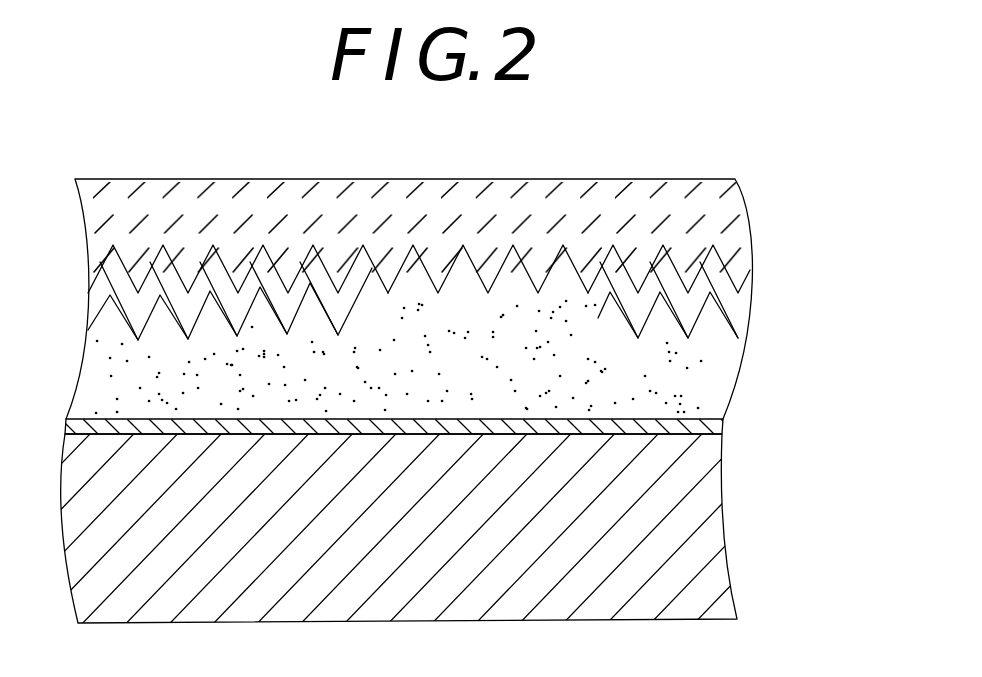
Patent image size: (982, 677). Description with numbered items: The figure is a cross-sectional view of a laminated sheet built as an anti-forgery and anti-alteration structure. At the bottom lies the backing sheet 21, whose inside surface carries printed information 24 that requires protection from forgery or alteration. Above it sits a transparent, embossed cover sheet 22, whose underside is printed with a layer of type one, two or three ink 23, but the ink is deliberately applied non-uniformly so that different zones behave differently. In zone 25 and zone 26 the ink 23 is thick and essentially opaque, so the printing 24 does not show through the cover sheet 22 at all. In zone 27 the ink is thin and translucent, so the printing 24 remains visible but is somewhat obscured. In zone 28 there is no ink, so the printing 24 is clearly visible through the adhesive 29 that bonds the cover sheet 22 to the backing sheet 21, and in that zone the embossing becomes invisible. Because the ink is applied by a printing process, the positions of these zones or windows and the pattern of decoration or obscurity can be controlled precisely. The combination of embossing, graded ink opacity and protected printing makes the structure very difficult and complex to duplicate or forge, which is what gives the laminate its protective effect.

The backing sheet 21 is at (572, 598).
The transparent embossed cover sheet 22 is at (437, 179).
The ink layer 23 is at (688, 308).
The printed information 24 is at (686, 428).
The opaque ink zone 25 is at (176, 293).
The opaque ink zone 26 is at (678, 272).
The translucent ink zone 27 is at (287, 290).
The ink-free zone 28 is at (531, 268).
The adhesive 29 is at (482, 313).